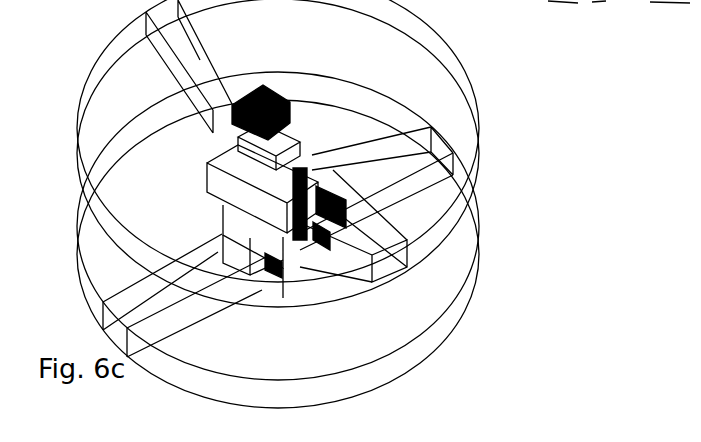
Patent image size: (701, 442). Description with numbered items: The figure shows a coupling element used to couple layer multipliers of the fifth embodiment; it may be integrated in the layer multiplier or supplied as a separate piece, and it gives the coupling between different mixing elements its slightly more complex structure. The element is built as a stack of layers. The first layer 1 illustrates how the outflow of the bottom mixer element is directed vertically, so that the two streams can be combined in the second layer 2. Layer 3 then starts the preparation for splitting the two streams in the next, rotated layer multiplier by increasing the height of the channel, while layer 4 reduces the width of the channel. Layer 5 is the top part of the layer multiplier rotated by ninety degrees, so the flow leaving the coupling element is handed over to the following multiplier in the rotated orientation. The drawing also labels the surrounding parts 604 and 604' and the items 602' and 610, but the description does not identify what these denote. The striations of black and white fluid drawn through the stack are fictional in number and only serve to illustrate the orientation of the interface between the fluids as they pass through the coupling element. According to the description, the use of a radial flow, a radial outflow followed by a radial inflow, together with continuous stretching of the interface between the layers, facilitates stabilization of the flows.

The lower slotted disk 604 is at (308, 240).
The upper slotted disk 604' is at (332, 153).
The device/electrode structure 602' is at (358, 151).
The contact pad 610 is at (325, 236).
The first layer 1 is at (246, 266).
The second layer 2 is at (246, 236).
The layer 3 is at (262, 189).
The layer 4 is at (258, 147).
The layer 5 is at (248, 112).